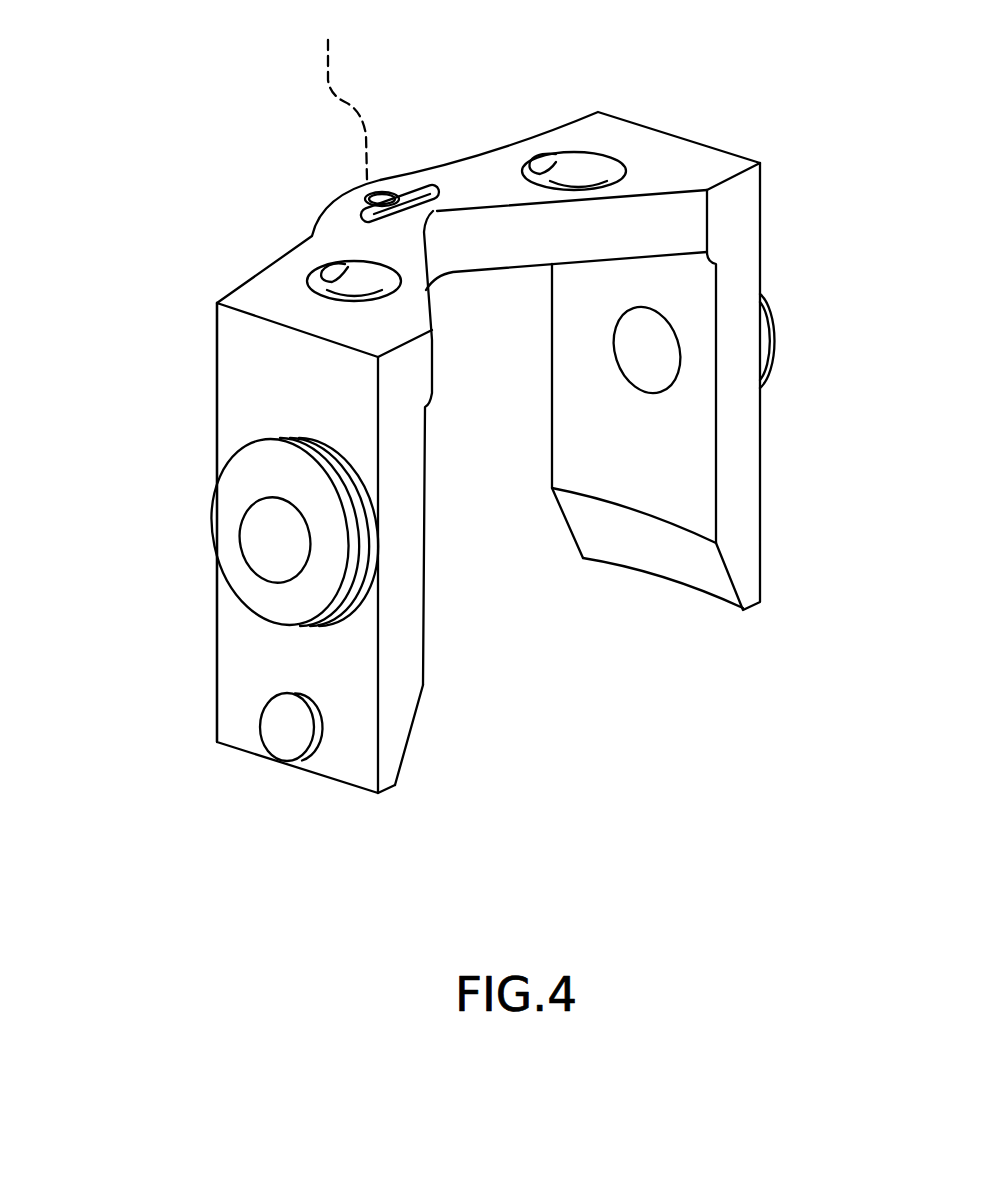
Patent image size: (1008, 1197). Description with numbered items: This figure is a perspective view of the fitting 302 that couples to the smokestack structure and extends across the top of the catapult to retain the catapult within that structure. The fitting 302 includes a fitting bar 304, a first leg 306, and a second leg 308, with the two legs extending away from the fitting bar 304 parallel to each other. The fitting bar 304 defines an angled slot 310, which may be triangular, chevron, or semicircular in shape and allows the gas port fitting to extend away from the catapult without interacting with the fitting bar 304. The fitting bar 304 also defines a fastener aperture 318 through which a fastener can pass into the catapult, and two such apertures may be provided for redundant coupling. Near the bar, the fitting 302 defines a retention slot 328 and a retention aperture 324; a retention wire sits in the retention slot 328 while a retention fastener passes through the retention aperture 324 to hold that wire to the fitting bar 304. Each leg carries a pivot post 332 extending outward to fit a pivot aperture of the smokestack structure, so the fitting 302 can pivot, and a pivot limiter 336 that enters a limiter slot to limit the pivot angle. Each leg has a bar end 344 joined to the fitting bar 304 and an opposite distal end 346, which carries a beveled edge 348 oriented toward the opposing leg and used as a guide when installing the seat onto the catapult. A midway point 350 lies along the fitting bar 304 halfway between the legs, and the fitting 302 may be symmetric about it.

The fitting 302 is at (650, 130).
The fitting bar 304 is at (490, 180).
The first leg 306 is at (242, 666).
The second leg 308 is at (740, 466).
The angled slot 310 is at (572, 232).
The fastener aperture 318 is at (364, 258).
The retention aperture 324 is at (387, 197).
The retention slot 328 is at (433, 210).
The pivot post 332 is at (202, 515).
The pivot limiter 336 is at (271, 739).
The bar end 344 is at (228, 321).
The distal end 346 is at (408, 803).
The beveled edge 348 is at (413, 727).
The midway point 350 is at (338, 93).